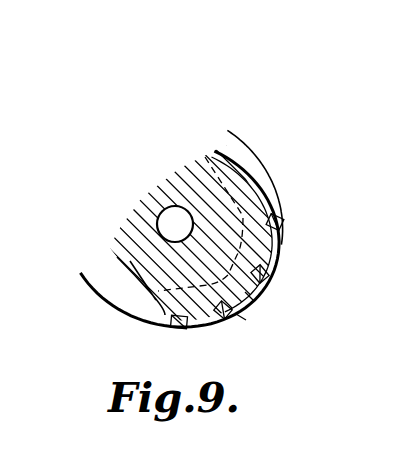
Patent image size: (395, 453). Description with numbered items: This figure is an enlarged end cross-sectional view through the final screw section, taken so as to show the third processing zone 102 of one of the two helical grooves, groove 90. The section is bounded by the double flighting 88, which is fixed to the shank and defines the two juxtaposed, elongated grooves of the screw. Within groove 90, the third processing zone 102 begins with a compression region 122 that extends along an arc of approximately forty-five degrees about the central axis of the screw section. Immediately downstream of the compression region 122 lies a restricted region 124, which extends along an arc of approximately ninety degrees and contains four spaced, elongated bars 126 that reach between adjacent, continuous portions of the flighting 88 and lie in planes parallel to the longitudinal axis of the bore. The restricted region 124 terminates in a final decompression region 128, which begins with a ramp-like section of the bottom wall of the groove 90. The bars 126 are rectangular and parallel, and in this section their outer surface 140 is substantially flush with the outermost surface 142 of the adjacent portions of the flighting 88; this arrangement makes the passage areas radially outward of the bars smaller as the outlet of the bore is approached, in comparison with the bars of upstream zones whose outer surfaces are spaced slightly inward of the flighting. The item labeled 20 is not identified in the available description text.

The lock assembly 20 is at (116, 150).
The double flighting 88 is at (240, 128).
The groove 90 is at (104, 303).
The compression region 122 is at (264, 164).
The outer surface of bar 140 is at (285, 216).
The outermost surface of flighting 142 is at (268, 263).
The elongated bar 126 is at (173, 328).
The decompression region 128 is at (124, 316).
The third processing zone 102 is at (241, 318).
The restricted region 124 is at (251, 296).